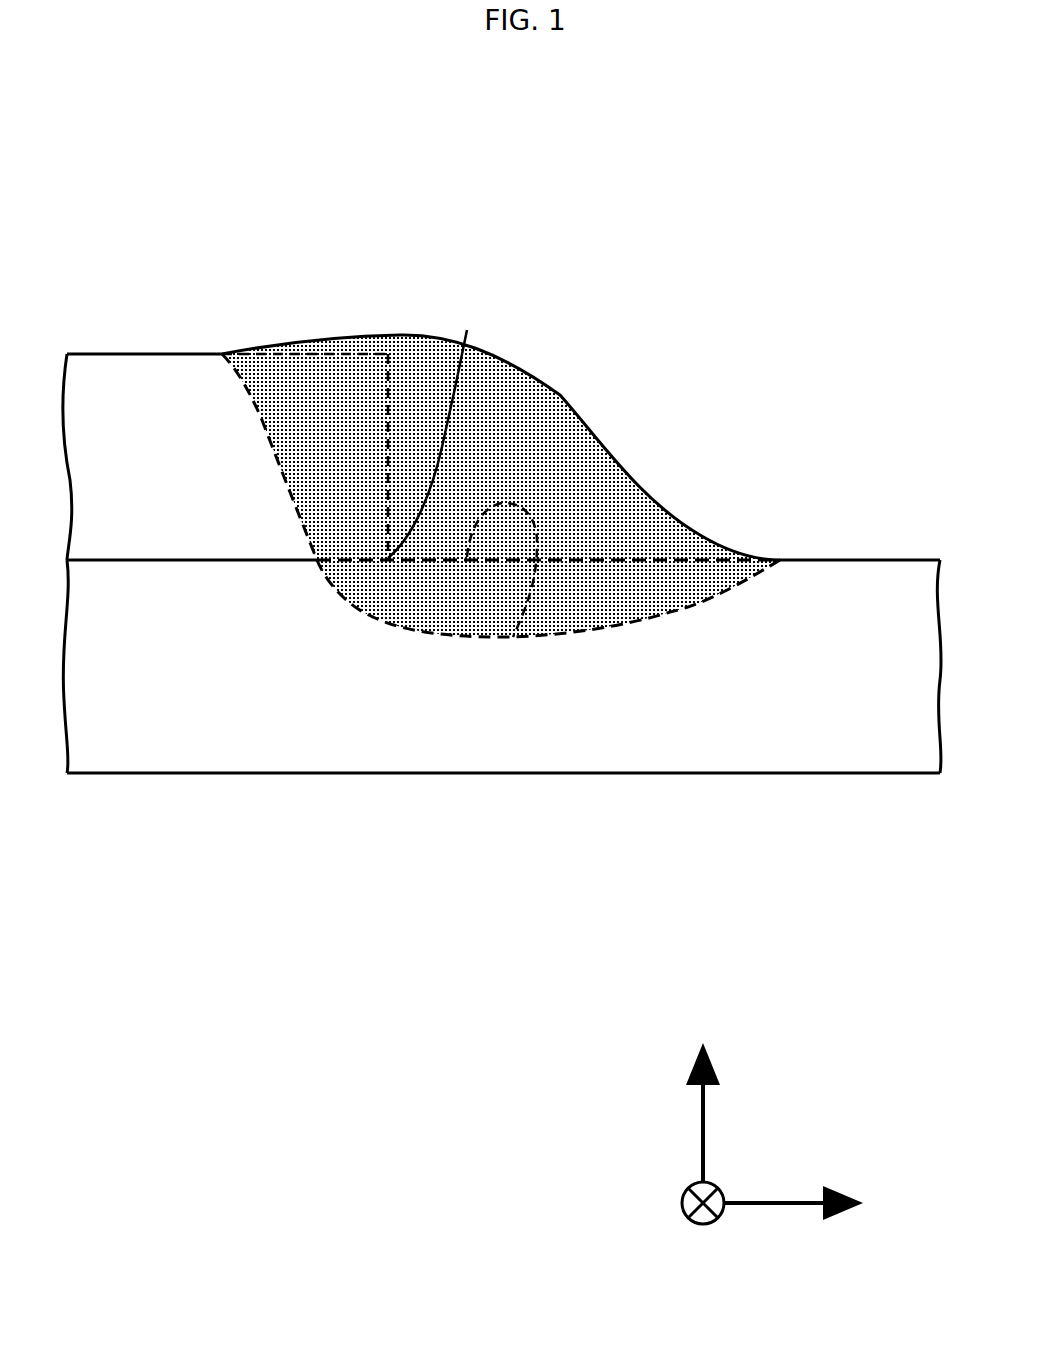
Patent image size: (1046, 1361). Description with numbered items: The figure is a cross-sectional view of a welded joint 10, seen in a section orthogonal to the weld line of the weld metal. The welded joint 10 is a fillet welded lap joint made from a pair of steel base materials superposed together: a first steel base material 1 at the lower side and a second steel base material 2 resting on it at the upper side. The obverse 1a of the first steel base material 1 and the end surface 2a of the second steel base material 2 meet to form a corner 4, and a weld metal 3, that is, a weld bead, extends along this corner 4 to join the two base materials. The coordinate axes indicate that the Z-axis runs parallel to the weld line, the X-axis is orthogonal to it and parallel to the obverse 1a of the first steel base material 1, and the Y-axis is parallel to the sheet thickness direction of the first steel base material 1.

The welded joint 10 is at (502, 677).
The first steel base material 1 is at (190, 718).
The obverse 1a is at (513, 637).
The second steel base material 2 is at (137, 372).
The end surface 2a is at (392, 440).
The weld metal 3 is at (522, 393).
The corner 4 is at (467, 330).